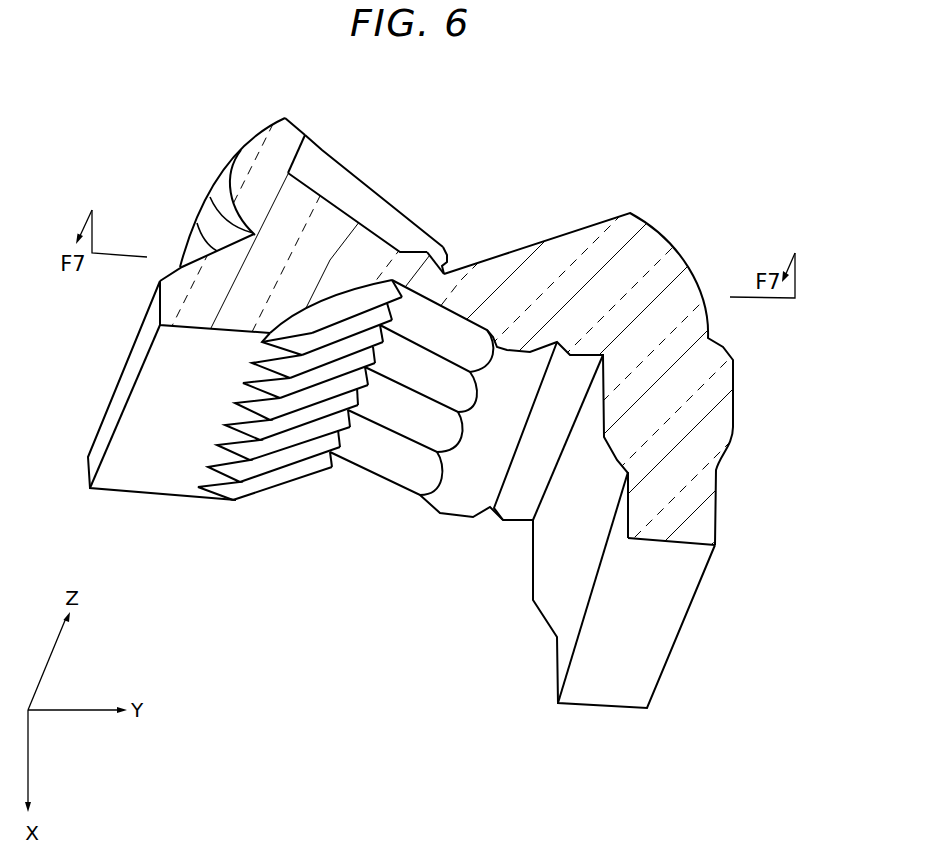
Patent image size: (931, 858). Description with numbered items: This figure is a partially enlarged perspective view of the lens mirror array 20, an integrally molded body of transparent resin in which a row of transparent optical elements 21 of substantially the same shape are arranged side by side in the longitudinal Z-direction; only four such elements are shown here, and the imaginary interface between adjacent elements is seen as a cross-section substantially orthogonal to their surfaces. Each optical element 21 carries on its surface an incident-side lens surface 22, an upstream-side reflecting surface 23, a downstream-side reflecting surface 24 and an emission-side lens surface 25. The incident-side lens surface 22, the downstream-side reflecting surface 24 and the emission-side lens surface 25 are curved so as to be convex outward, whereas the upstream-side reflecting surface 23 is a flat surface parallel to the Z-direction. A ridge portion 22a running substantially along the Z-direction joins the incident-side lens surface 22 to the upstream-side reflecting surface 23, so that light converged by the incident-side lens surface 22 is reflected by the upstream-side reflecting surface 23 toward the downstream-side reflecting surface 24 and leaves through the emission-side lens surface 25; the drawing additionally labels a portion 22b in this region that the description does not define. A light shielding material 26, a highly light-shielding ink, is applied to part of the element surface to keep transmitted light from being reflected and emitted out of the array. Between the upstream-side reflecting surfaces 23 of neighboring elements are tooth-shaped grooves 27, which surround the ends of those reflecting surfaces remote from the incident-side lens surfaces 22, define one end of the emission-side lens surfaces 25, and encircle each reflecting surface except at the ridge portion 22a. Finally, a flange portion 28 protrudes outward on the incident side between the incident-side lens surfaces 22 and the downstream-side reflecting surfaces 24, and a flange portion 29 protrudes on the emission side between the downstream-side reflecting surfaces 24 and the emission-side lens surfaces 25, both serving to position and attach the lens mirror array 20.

The lens mirror array 20 is at (647, 168).
The optical element 21 is at (232, 163).
The incident-side lens surface 22 is at (270, 126).
The ridge portion 22a is at (285, 117).
The curved surface 22b is at (208, 192).
The upstream-side reflecting surface 23 is at (367, 175).
The downstream-side reflecting surface 24 is at (405, 428).
The emission-side lens surface 25 is at (681, 256).
The light shielding material 26 is at (321, 160).
The groove 27 is at (398, 208).
The flange portion 28 is at (88, 472).
The flange portion 29 is at (690, 615).